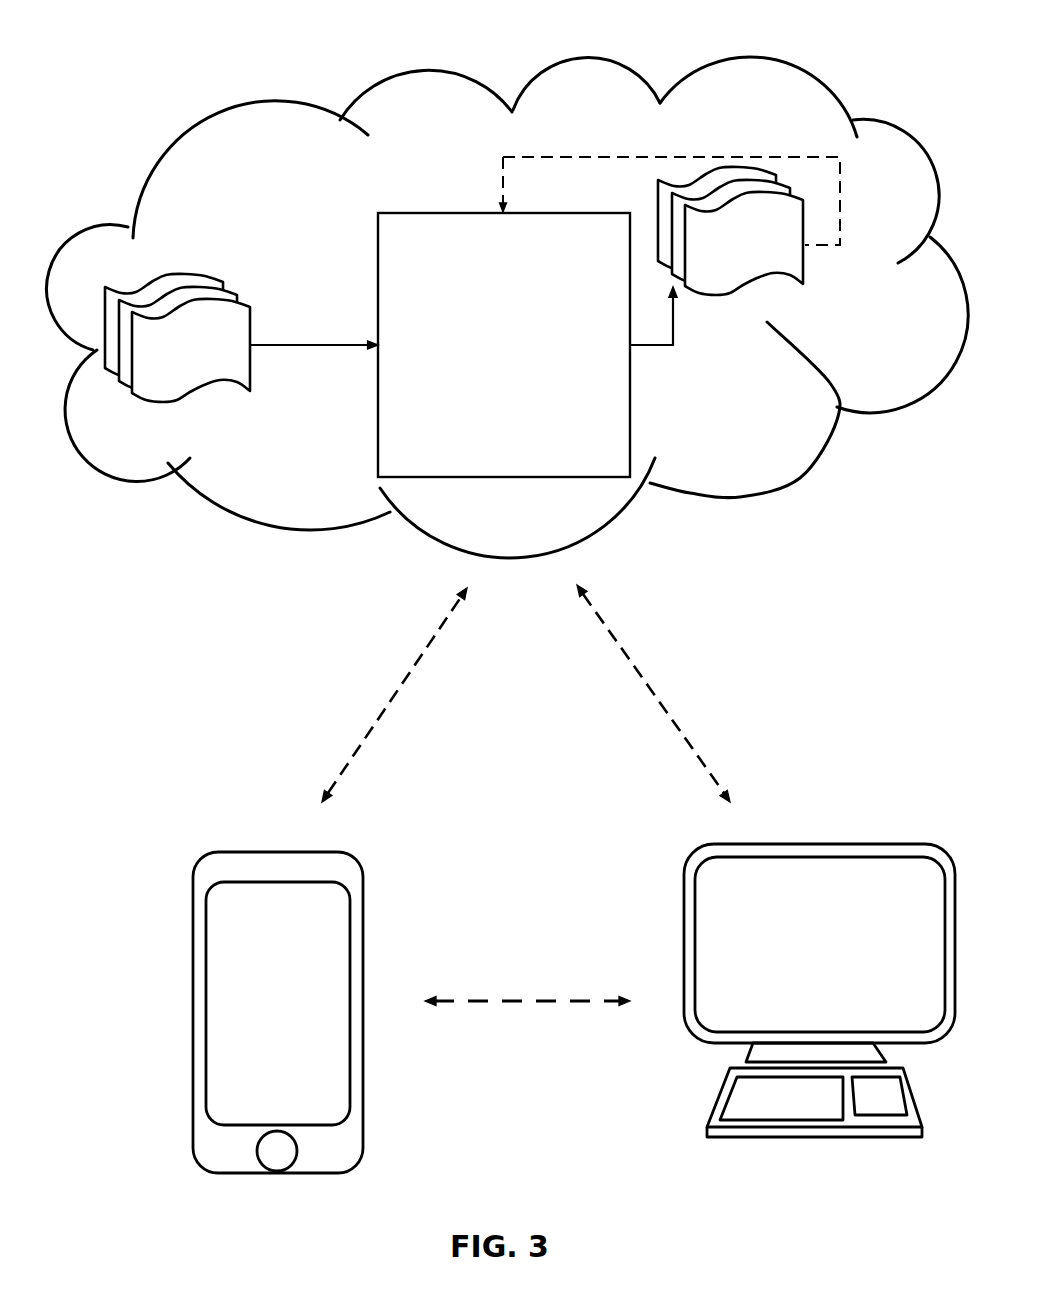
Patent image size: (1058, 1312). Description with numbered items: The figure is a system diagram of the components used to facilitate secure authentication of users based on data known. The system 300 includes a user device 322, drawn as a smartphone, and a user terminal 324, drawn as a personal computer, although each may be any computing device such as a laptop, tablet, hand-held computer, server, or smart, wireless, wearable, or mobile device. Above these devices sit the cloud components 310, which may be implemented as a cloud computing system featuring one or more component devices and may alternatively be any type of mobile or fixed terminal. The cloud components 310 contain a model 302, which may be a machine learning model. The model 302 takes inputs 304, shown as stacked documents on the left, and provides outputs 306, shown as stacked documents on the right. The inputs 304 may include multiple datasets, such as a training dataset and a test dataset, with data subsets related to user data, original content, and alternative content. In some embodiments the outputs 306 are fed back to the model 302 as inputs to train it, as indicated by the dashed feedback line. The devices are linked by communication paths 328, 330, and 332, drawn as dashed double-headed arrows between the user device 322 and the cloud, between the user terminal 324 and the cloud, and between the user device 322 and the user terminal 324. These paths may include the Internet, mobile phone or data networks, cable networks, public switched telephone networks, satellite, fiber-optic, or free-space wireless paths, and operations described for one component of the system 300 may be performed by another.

The system 300 is at (522, 54).
The model 302 is at (526, 361).
The inputs 304 is at (197, 272).
The outputs 306 is at (785, 274).
The cloud components 310 is at (803, 118).
The user device 322 is at (266, 828).
The user terminal 324 is at (812, 835).
The communication path 328 is at (350, 678).
The communication path 330 is at (733, 650).
The communication path 332 is at (519, 970).